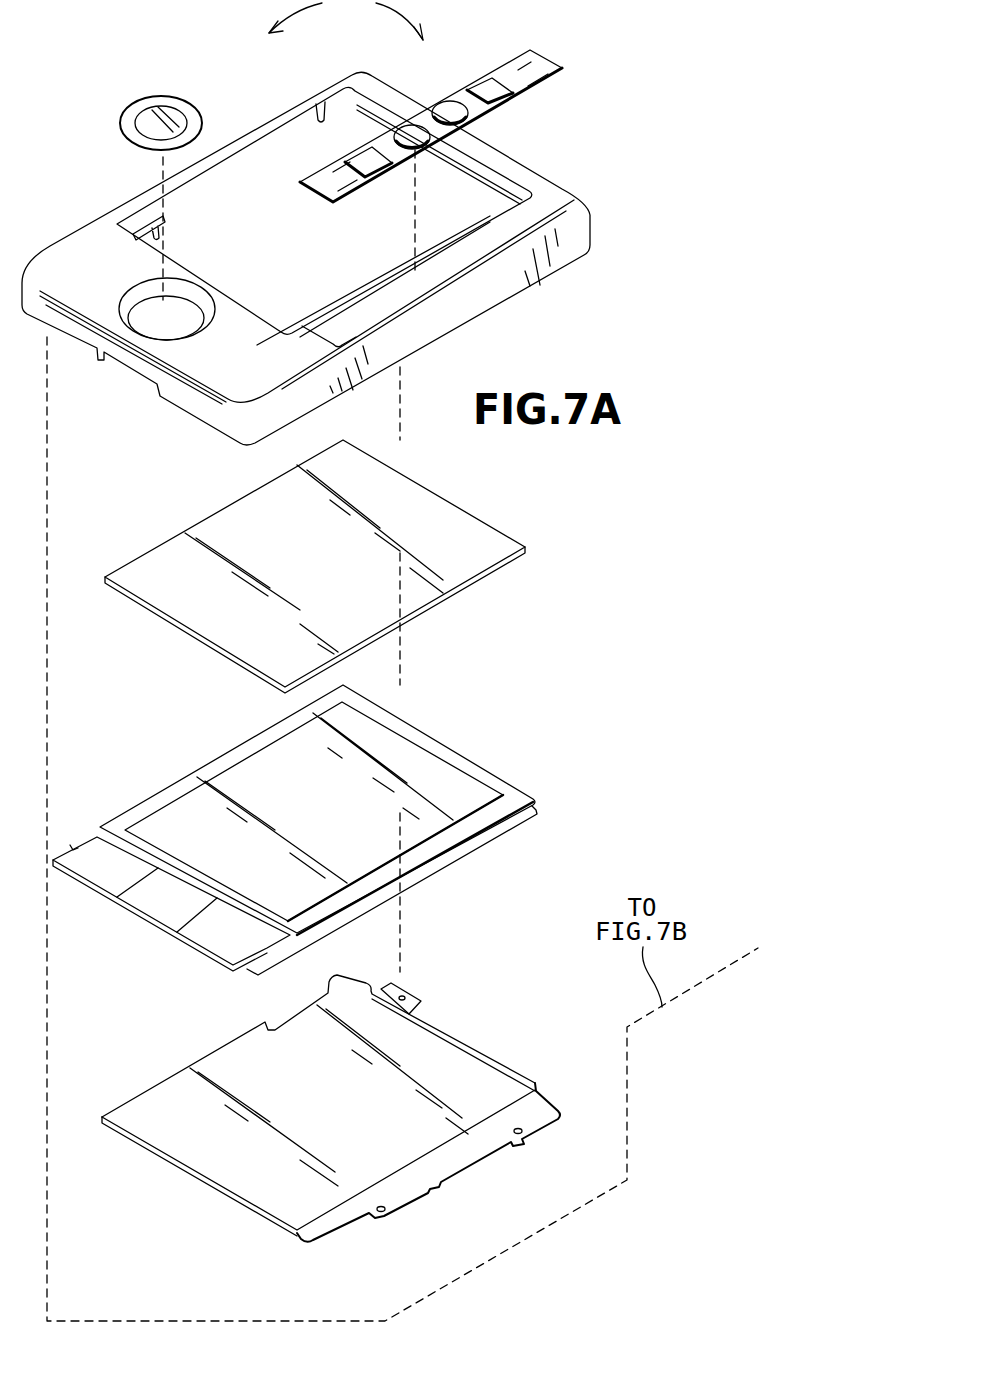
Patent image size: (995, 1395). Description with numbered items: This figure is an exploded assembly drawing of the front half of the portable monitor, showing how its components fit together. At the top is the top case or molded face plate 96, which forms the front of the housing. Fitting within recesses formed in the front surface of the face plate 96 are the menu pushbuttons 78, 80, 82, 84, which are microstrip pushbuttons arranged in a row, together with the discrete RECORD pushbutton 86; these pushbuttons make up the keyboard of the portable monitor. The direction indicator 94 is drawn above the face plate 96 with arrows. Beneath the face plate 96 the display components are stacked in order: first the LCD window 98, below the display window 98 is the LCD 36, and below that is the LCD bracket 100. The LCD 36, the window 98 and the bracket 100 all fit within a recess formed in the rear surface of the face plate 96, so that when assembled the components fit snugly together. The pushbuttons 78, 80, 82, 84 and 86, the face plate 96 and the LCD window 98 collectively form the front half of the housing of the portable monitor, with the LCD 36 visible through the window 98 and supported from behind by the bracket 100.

The LCD 36 is at (334, 812).
The menu pushbutton 78 is at (492, 88).
The menu pushbutton 80 is at (462, 119).
The menu pushbutton 82 is at (414, 140).
The menu pushbutton 84 is at (370, 164).
The RECORD pushbutton 86 is at (160, 96).
The rotation arrows 94 is at (346, 20).
The top case or molded face plate 96 is at (593, 212).
The LCD window 98 is at (334, 575).
The LCD bracket 100 is at (340, 1105).